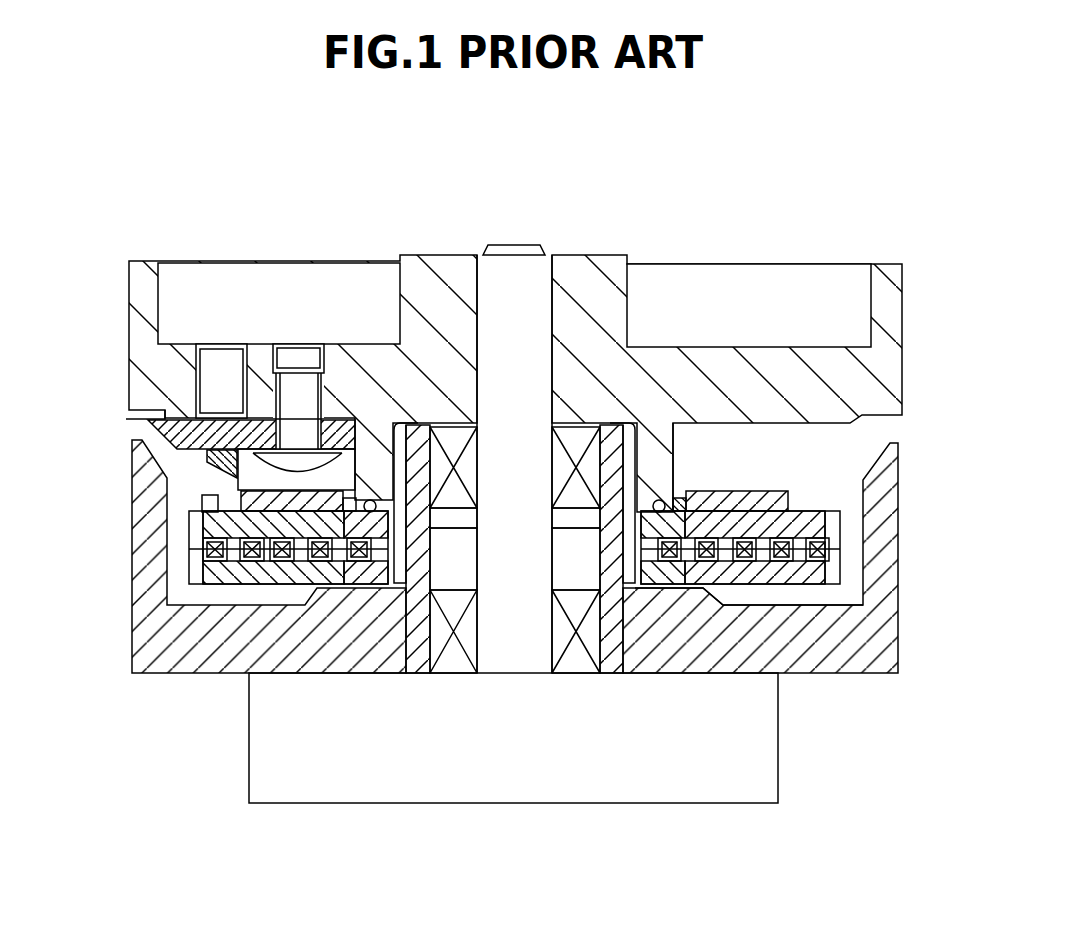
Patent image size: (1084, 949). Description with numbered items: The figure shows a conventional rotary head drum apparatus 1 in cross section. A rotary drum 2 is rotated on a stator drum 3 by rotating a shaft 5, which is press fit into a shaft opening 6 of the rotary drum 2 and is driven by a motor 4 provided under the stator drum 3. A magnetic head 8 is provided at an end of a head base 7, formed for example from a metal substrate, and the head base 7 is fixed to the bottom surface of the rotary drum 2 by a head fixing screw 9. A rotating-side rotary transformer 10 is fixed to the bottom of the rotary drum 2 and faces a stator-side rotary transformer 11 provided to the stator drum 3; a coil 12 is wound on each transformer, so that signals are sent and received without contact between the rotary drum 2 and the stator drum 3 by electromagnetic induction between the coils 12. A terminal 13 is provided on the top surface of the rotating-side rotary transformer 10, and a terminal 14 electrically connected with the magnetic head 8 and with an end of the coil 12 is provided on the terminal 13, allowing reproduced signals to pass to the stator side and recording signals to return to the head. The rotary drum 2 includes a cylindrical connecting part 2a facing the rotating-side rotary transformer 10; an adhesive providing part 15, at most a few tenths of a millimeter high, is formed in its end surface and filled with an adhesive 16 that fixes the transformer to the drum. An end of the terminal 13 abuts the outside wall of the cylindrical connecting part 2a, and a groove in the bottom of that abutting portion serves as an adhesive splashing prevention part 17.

The rotary head drum apparatus 1 is at (689, 150).
The rotary drum 2 is at (612, 268).
The cylindrical connecting part 2a is at (665, 458).
The stator drum 3 is at (899, 637).
The motor 4 is at (514, 792).
The shaft 5 is at (496, 268).
The shaft opening 6 is at (556, 298).
The head base 7 is at (163, 439).
The magnetic head 8 is at (127, 418).
The head fixing screw 9 is at (302, 385).
The rotating-side rotary transformer 10 is at (823, 523).
The stator-side rotary transformer 11 is at (835, 578).
The coil 12 is at (202, 577).
The terminal 13 is at (792, 498).
The terminal 14 is at (222, 465).
The adhesive providing part 15 is at (386, 498).
The adhesive 16 is at (655, 513).
The adhesive splashing prevention part 17 is at (684, 500).